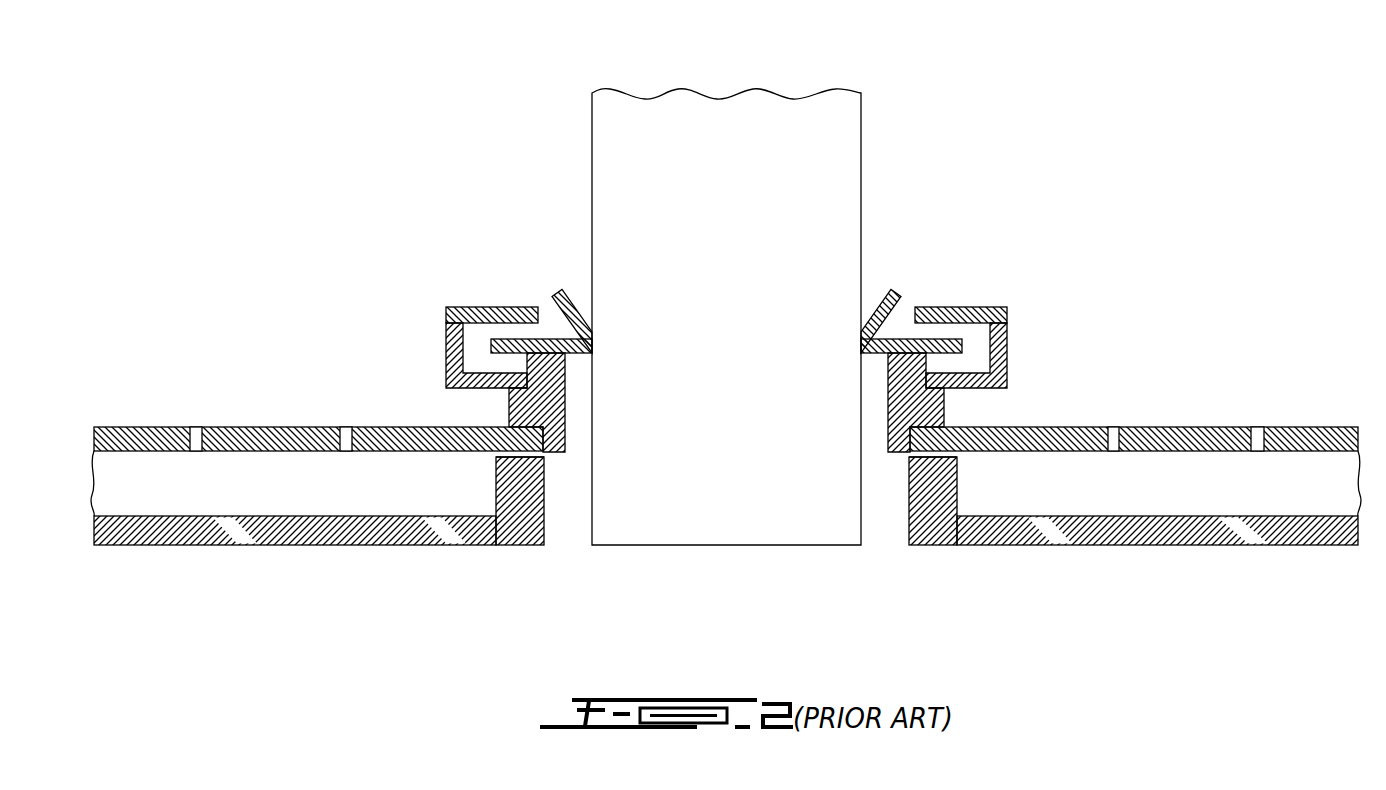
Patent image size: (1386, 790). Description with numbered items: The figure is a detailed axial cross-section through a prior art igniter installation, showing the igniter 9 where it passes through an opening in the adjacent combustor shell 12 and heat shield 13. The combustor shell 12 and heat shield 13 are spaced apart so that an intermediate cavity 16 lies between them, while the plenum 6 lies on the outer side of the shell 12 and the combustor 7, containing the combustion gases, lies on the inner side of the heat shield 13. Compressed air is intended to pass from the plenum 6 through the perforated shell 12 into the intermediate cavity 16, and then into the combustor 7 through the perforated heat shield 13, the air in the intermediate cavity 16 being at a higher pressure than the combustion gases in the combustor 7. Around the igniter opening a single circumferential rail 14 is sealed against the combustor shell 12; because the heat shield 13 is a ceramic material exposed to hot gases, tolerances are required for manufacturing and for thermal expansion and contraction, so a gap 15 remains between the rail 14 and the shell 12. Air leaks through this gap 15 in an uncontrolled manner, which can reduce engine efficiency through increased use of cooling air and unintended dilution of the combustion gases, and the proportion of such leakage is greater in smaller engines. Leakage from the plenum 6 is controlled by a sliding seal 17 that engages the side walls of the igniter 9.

The plenum 6 is at (292, 163).
The combustor 7 is at (290, 678).
The igniter 9 is at (786, 93).
The combustor shell 12 is at (295, 426).
The heat shield 13 is at (205, 546).
The circumferential rail 14 is at (523, 508).
The gap 15 is at (543, 452).
The intermediate cavity 16 is at (148, 487).
The sliding seal 17 is at (900, 290).